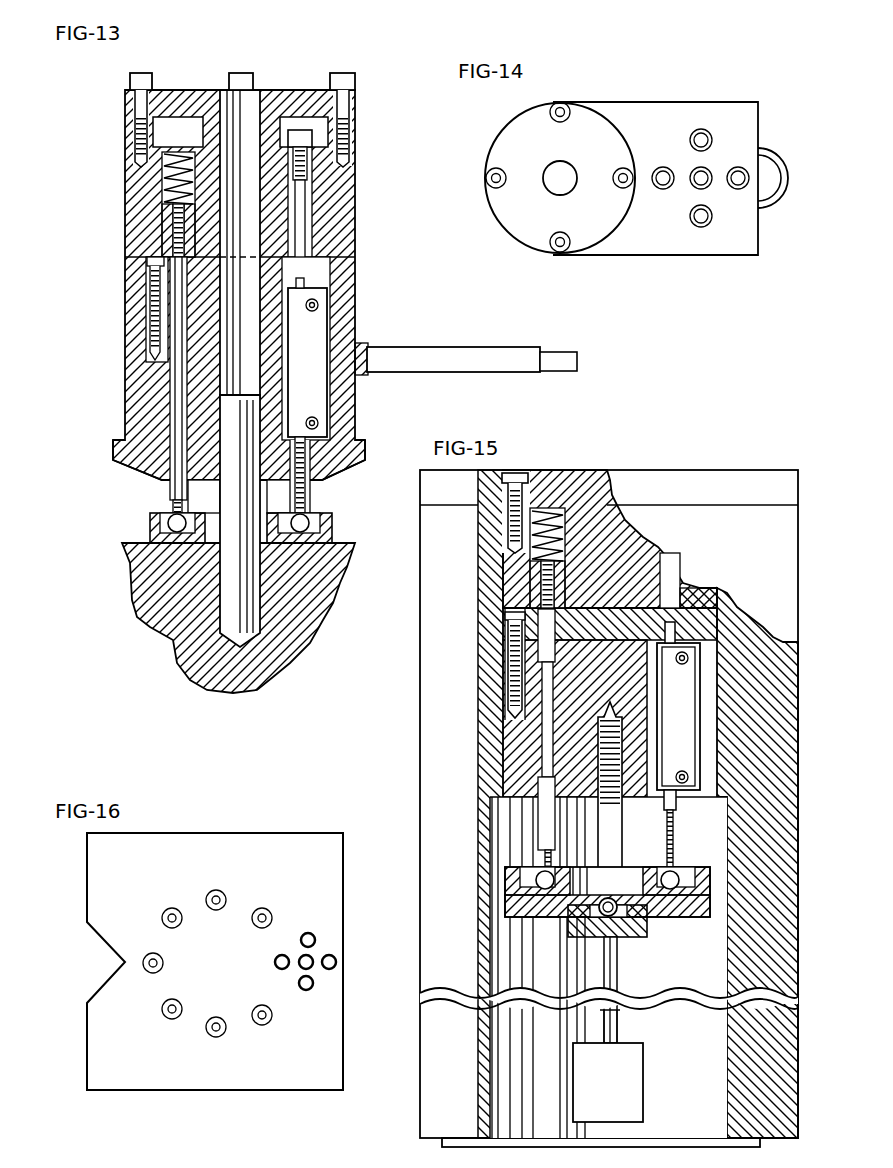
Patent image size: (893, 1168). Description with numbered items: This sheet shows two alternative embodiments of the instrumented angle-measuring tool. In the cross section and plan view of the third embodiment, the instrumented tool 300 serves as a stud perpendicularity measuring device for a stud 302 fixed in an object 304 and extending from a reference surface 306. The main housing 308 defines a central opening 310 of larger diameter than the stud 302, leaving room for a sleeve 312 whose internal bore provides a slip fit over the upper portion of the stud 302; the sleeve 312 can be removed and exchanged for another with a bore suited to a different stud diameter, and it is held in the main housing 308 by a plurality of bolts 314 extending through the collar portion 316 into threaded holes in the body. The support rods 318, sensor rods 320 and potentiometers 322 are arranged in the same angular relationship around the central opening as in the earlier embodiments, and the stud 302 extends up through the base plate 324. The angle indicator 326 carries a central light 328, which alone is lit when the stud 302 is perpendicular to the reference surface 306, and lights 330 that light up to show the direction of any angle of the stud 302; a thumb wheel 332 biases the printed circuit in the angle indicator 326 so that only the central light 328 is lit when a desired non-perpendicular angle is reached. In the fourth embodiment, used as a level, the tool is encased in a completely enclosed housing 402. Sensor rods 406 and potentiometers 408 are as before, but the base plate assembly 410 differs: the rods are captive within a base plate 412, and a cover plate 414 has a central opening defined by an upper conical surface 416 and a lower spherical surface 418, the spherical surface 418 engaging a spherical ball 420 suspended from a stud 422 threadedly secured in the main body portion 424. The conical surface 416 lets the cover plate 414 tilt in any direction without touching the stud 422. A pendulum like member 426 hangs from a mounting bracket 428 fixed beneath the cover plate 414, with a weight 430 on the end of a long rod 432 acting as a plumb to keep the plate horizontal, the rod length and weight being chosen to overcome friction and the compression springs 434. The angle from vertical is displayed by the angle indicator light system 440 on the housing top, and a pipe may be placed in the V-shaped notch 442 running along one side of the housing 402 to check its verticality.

In FIG. 13, the instrumented tool 300 is at (108, 190).
In FIG. 14, the instrumented tool 300 is at (518, 138).
In FIG. 13, the stud 302 is at (225, 575).
In FIG. 13, the object 304 is at (170, 635).
In FIG. 13, the reference surface 306 is at (348, 555).
In FIG. 13, the main housing 308 is at (135, 284).
In FIG. 13, the central opening 310 is at (290, 205).
In FIG. 13, the sleeve 312 is at (272, 128).
In FIG. 13, the bolts 314 is at (140, 82).
In FIG. 13, the collar portion 316 is at (190, 103).
In FIG. 13, the support rods 318 is at (173, 402).
In FIG. 13, the sensor rods 320 is at (300, 448).
In FIG. 13, the potentiometers 322 is at (310, 325).
In FIG. 13, the base plate 324 is at (316, 518).
In FIG. 13, the angle indicator 326 is at (451, 348).
In FIG. 14, the angle indicator 326 is at (645, 108).
In FIG. 14, the central light 328 is at (703, 190).
In FIG. 14, the lights 330 is at (740, 170).
In FIG. 13, the thumb wheel 332 is at (556, 362).
In FIG. 14, the thumb wheel 332 is at (768, 210).
In FIG. 15, the housing 402 is at (428, 1128).
In FIG. 15, the sensor rods 406 is at (675, 807).
In FIG. 15, the potentiometers 408 is at (687, 677).
In FIG. 15, the base plate assembly 410 is at (505, 893).
In FIG. 15, the base plate 412 is at (613, 804).
In FIG. 15, the cover plate 414 is at (680, 890).
In FIG. 15, the upper conical surface 416 is at (604, 898).
In FIG. 15, the lower spherical surface 418 is at (565, 906).
In FIG. 15, the spherical ball 420 is at (616, 934).
In FIG. 15, the stud 422 is at (600, 768).
In FIG. 15, the main body portion 424 is at (505, 718).
In FIG. 15, the pendulum like member 426 is at (618, 1038).
In FIG. 15, the mounting bracket 428 is at (578, 925).
In FIG. 15, the weight 430 is at (630, 1103).
In FIG. 15, the long rod 432 is at (618, 1010).
In FIG. 15, the compression springs 434 is at (548, 510).
In FIG. 16, the angle indicator light system 440 is at (312, 991).
In FIG. 16, the V-shaped notch 442 is at (110, 975).